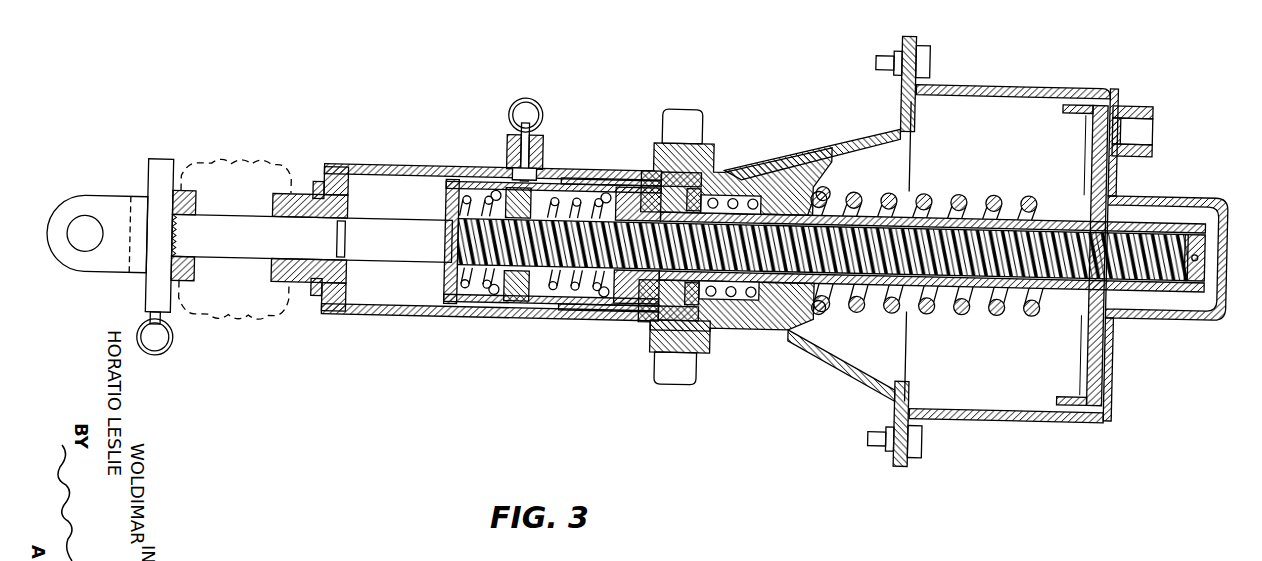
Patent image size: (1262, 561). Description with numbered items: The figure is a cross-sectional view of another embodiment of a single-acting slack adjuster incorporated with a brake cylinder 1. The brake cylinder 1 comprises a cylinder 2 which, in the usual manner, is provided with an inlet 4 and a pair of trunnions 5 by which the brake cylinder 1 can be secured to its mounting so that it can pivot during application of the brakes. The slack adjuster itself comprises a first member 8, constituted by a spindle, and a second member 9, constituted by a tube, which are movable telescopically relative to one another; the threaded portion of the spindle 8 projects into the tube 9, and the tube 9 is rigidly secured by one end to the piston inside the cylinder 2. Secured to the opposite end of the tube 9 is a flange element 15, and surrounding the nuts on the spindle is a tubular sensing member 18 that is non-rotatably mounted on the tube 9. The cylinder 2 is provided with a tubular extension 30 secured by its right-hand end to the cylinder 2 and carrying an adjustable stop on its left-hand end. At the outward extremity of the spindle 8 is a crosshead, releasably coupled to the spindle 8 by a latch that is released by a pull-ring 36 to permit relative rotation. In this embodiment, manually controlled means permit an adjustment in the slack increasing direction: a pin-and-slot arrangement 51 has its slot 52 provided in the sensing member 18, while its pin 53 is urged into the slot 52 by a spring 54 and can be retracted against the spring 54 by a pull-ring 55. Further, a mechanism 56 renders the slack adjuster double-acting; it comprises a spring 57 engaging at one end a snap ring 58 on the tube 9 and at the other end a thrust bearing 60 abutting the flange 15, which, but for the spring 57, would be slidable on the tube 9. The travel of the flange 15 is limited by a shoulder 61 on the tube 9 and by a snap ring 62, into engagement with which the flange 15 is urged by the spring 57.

The brake cylinder 1 is at (1016, 82).
The cylinder 2 is at (791, 188).
The inlet 4 is at (1142, 135).
The trunnions 5 is at (659, 129).
The first member 8 is at (405, 262).
The second member 9 is at (932, 218).
The flange element 15 is at (662, 341).
The tubular sensing member 18 is at (574, 180).
The tubular extension 30 is at (440, 172).
The pull-ring 36 is at (178, 341).
The pin-and-slot arrangement 51 is at (506, 132).
The slot 52 is at (596, 180).
The pin 53 is at (508, 180).
The spring 54 is at (543, 152).
The pull-ring 55 is at (542, 113).
The mechanism 56 is at (720, 180).
The spring 57 is at (753, 328).
The snap ring 58 is at (772, 318).
The thrust bearing 60 is at (710, 320).
The shoulder 61 is at (648, 322).
The snap ring 62 is at (612, 318).